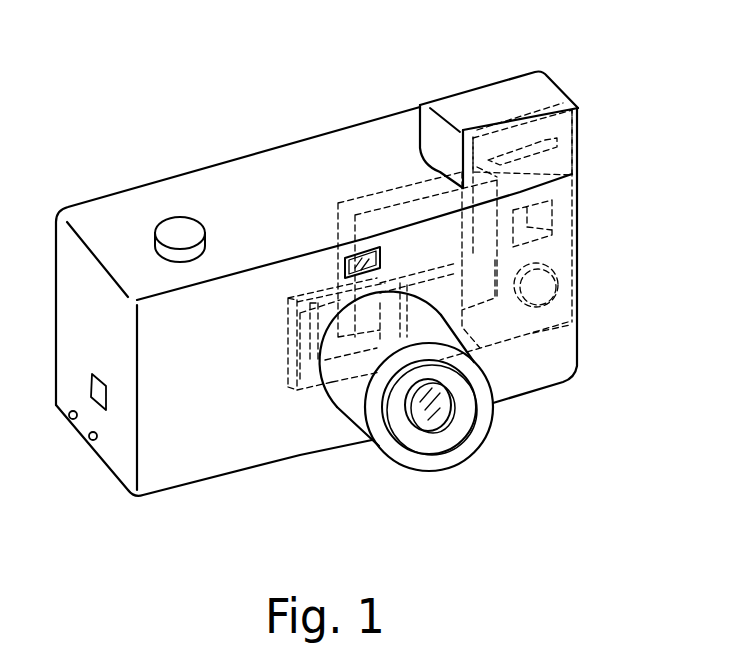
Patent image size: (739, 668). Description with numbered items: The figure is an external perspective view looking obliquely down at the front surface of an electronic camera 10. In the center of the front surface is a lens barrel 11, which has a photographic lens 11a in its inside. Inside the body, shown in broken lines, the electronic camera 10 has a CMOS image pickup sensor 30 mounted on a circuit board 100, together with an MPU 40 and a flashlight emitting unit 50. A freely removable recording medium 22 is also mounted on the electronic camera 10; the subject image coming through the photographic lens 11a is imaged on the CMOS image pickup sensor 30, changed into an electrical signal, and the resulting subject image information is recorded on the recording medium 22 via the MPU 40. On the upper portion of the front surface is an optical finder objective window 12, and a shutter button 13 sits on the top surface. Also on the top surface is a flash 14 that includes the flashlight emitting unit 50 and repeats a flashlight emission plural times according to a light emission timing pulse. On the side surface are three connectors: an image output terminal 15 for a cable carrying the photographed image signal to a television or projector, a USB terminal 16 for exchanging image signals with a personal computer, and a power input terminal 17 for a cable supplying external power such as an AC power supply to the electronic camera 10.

The electronic camera 10 is at (298, 116).
The lens barrel 11 is at (347, 395).
The photographic lens 11a is at (437, 417).
The optical finder objective window 12 is at (345, 258).
The shutter button 13 is at (175, 233).
The flash 14 is at (520, 82).
The image output terminal 15 is at (97, 403).
The USB terminal 16 is at (72, 418).
The power input terminal 17 is at (95, 443).
The recording medium 22 is at (373, 200).
The CMOS image pickup sensor 30 is at (317, 380).
The MPU 40 is at (480, 348).
The flashlight emitting unit 50 is at (572, 232).
The circuit board 100 is at (285, 340).